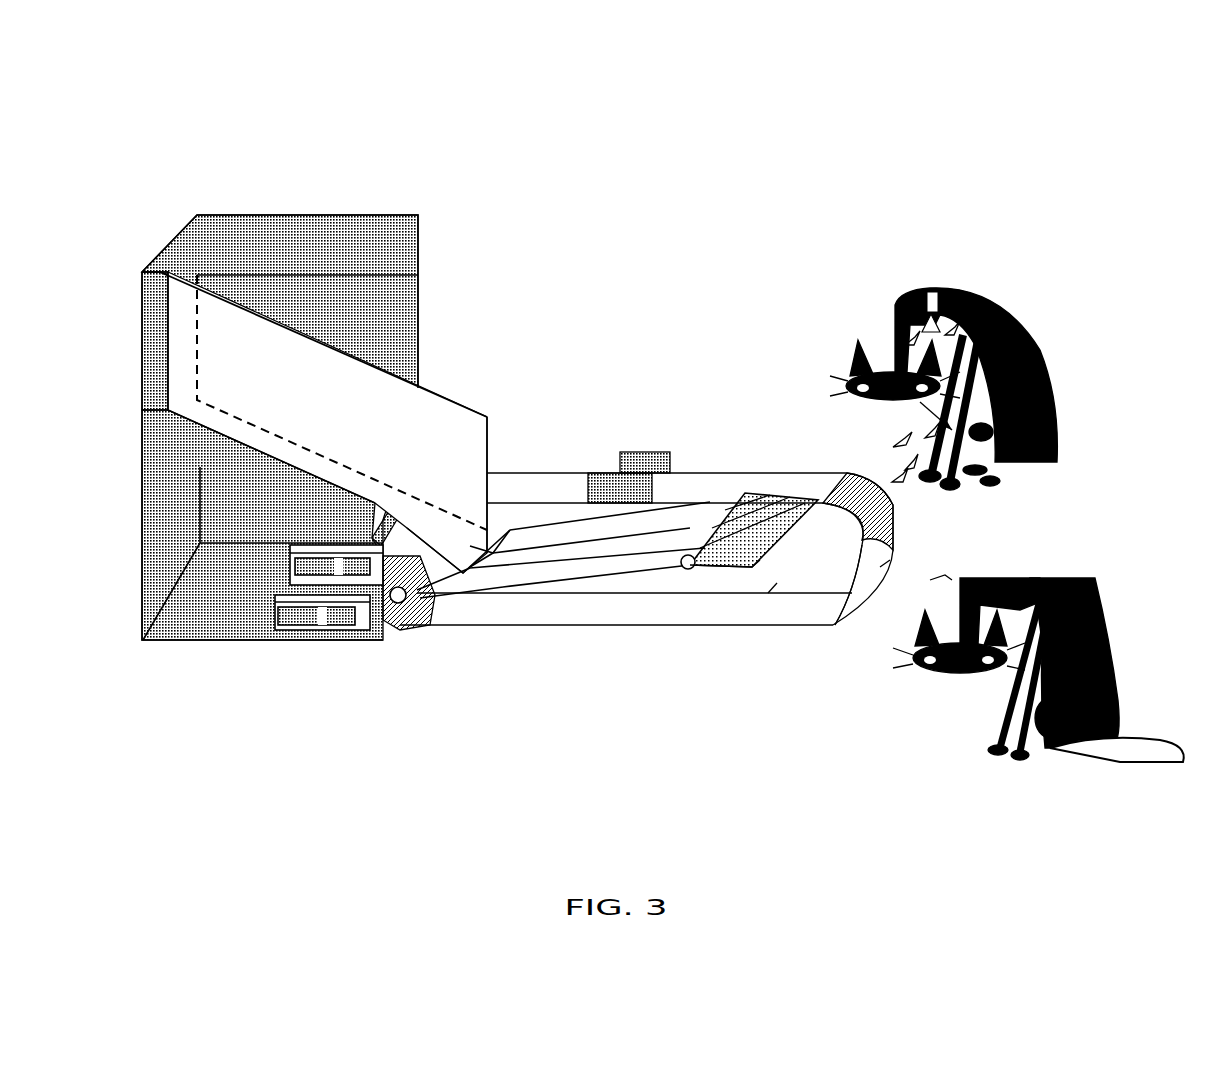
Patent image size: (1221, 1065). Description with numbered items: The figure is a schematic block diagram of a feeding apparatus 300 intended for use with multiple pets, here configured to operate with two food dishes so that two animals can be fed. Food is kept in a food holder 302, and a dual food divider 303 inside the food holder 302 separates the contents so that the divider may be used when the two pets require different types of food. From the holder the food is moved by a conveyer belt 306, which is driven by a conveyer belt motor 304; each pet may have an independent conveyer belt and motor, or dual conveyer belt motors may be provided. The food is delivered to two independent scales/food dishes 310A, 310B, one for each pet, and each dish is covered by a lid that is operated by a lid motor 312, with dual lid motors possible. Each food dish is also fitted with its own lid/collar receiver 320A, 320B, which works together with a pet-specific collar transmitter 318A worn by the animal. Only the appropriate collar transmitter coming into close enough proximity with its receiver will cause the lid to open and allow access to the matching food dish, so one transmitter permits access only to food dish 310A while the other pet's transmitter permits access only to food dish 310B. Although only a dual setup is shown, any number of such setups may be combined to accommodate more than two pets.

The feeding apparatus 300 is at (856, 124).
The food holder 302 is at (300, 208).
The dual food divider 303 is at (421, 387).
The conveyer belt motor 304 is at (305, 634).
The conveyer belt 306 is at (498, 574).
The scale/food dish 310A is at (797, 498).
The scale/food dish 310B is at (742, 577).
The lid motor 312 is at (569, 523).
The collar transmitter 318A is at (910, 306).
The lid/collar receiver 320A is at (895, 486).
The lid/collar receiver 320B is at (861, 534).